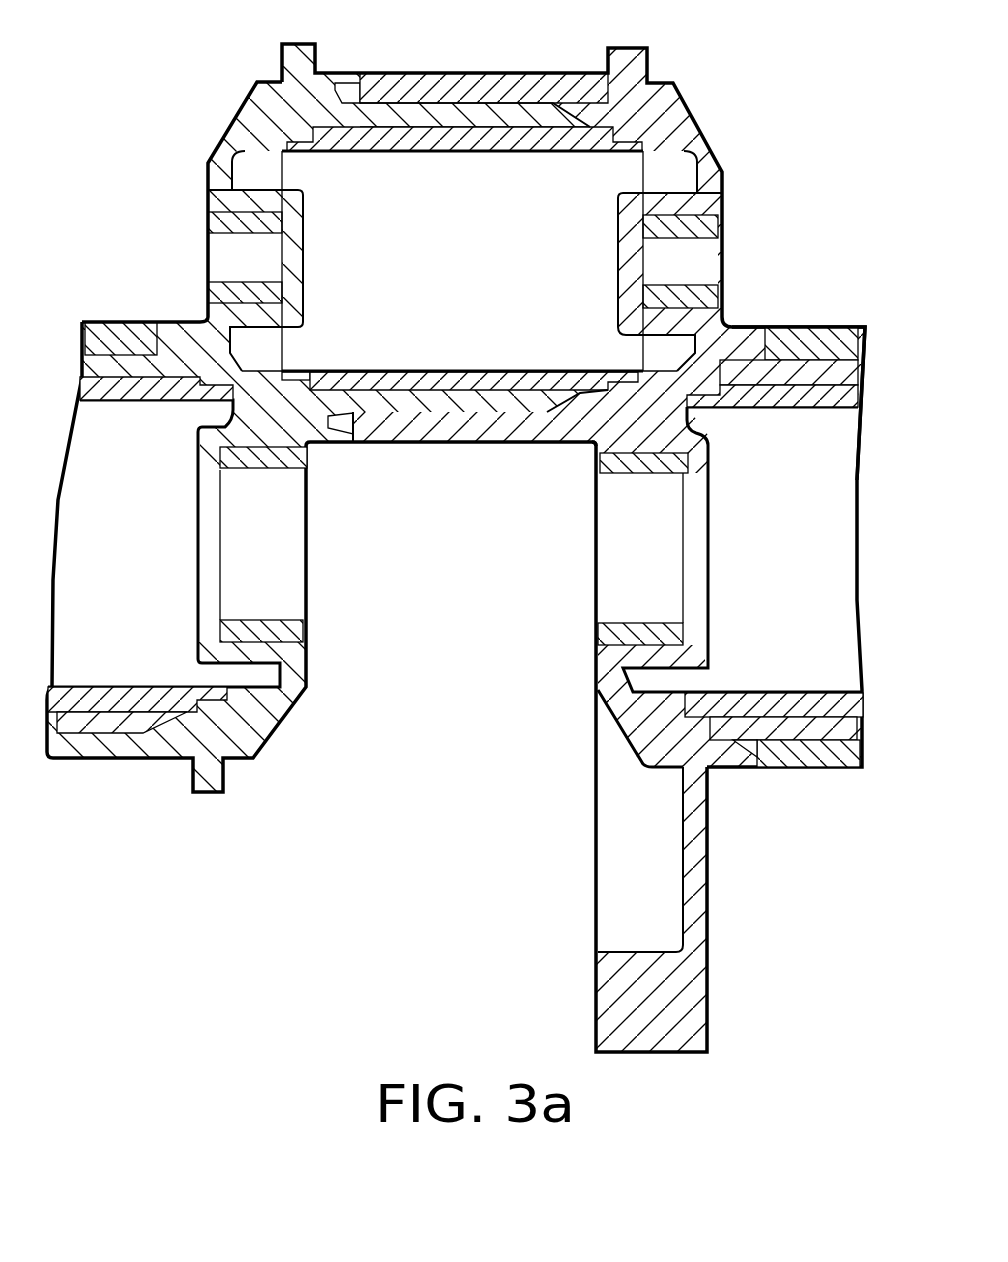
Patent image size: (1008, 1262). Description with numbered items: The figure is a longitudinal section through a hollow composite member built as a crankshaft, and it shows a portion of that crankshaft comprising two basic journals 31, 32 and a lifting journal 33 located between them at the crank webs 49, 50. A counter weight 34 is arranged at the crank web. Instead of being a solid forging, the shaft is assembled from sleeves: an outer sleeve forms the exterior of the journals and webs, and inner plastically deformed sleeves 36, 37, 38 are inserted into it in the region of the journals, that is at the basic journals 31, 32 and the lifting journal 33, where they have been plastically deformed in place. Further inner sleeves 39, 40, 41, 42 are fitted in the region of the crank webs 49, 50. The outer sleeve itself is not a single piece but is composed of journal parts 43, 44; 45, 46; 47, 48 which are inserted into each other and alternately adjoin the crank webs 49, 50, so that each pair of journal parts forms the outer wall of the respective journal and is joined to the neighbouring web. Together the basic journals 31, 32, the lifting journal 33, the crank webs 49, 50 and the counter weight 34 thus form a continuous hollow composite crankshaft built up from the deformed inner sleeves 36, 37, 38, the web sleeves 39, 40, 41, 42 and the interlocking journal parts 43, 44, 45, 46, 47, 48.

The basic journal 31 is at (117, 773).
The basic journal 32 is at (803, 780).
The lifting journal 33 is at (450, 452).
The counter weight 34 is at (598, 1008).
The inner plastically deformed sleeve 36 is at (160, 378).
The inner plastically deformed sleeve 37 is at (490, 143).
The inner plastically deformed sleeve 38 is at (767, 378).
The inner sleeve 39 is at (218, 222).
The inner sleeve 40 is at (717, 227).
The inner sleeve 41 is at (297, 628).
The inner sleeve 42 is at (600, 637).
The journal part 43 is at (102, 332).
The journal part 44 is at (123, 360).
The journal part 45 is at (375, 112).
The journal part 46 is at (430, 88).
The journal part 47 is at (797, 368).
The journal part 48 is at (833, 337).
The crank web 49 is at (250, 117).
The crank web 50 is at (680, 122).